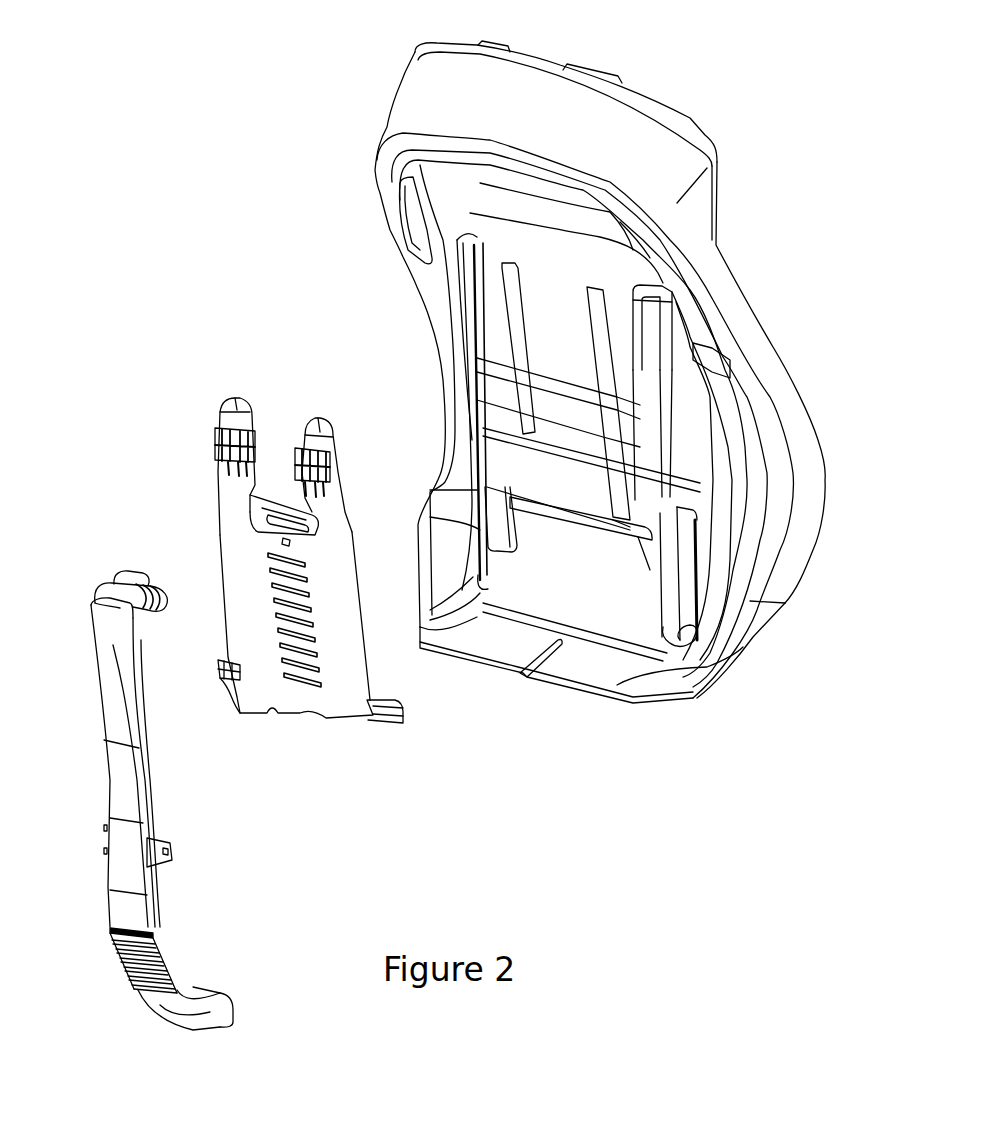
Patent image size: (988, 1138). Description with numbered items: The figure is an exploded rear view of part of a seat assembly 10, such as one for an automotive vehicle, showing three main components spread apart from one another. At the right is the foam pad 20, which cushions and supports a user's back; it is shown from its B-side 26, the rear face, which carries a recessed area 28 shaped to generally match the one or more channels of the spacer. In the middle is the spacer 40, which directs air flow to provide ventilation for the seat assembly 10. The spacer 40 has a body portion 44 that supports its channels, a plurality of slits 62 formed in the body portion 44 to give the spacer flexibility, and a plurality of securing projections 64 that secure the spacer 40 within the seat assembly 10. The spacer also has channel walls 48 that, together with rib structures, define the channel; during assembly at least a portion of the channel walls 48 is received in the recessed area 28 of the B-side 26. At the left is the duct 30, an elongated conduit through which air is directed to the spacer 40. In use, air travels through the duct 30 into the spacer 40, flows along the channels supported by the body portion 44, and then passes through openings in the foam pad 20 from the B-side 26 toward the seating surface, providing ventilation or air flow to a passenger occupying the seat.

The seat assembly 10 is at (240, 96).
The foam pad 20 is at (716, 136).
The B-side 26 is at (550, 278).
The recessed area 28 is at (513, 327).
The duct 30 is at (95, 783).
The spacer 40 is at (214, 505).
The body portion 44 is at (250, 632).
The channel walls 48 is at (343, 532).
The slits 62 is at (275, 583).
The securing projections 64 is at (275, 716).